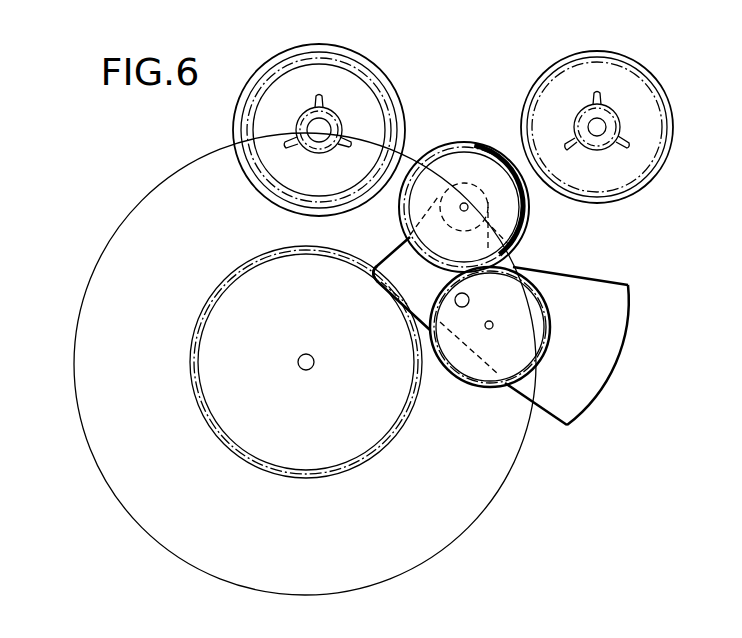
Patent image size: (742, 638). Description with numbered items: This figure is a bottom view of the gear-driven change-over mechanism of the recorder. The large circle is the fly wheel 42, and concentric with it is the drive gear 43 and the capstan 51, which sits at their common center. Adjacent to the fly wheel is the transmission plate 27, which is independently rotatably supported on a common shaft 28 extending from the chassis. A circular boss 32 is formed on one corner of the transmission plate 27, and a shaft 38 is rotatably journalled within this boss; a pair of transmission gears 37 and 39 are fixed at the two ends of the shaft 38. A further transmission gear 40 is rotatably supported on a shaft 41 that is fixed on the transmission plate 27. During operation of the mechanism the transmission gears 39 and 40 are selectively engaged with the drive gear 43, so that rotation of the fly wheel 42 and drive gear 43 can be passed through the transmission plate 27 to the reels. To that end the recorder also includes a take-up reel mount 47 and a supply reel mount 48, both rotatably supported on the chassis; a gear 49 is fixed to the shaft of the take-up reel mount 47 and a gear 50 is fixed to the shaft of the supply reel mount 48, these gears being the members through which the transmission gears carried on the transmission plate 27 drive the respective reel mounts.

The transmission plate 27 is at (375, 288).
The common shaft 28 is at (470, 297).
The circular boss 32 is at (516, 249).
The transmission gear 37 is at (531, 226).
The shaft 38 is at (537, 233).
The transmission gear 39 is at (487, 143).
The transmission gear 40 is at (551, 316).
The shaft 41 is at (491, 329).
The fly wheel 42 is at (443, 546).
The drive gear 43 is at (201, 296).
The take-up reel mount 47 is at (345, 87).
The supply reel mount 48 is at (627, 86).
The gear 49 is at (305, 57).
The gear 50 is at (663, 96).
The capstan 51 is at (312, 370).